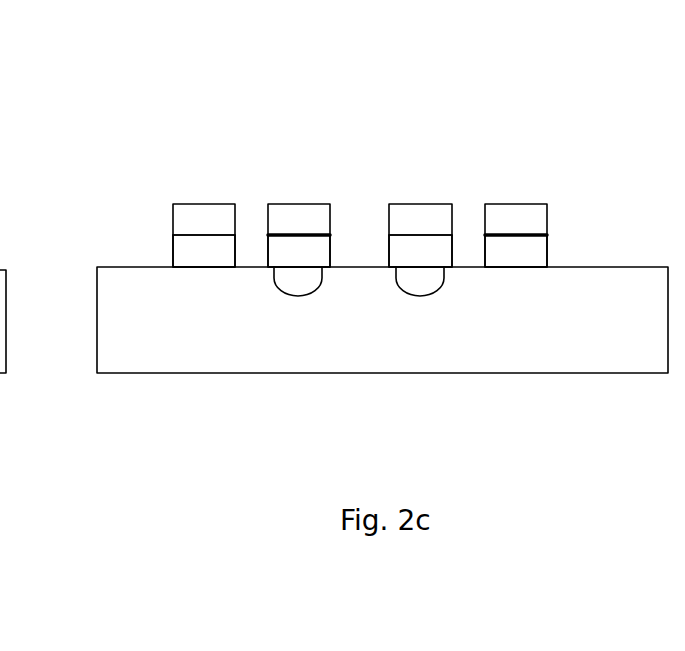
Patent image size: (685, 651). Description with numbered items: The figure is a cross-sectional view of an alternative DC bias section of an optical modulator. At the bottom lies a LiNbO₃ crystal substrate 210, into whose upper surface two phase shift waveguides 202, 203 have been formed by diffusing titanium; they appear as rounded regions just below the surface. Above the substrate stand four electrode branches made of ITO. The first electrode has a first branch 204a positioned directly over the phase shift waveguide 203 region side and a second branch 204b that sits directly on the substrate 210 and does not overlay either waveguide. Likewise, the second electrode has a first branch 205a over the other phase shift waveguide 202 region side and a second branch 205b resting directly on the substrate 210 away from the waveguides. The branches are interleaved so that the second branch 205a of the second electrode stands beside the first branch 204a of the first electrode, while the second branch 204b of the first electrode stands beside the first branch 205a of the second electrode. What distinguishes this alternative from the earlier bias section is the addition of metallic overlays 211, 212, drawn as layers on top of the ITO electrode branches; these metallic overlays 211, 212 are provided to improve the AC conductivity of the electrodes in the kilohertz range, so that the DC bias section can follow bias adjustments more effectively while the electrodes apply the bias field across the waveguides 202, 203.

The phase shift waveguide 202 is at (444, 287).
The phase shift waveguide 203 is at (272, 283).
The first branch of the first electrode 204a is at (452, 240).
The second branch of the first electrode 204b is at (173, 244).
The first branch of the second electrode 205a is at (268, 240).
The second branch of the second electrode 205b is at (547, 255).
The substrate 210 is at (655, 267).
The metallic overlay 211 is at (280, 204).
The metallic overlay 212 is at (177, 203).